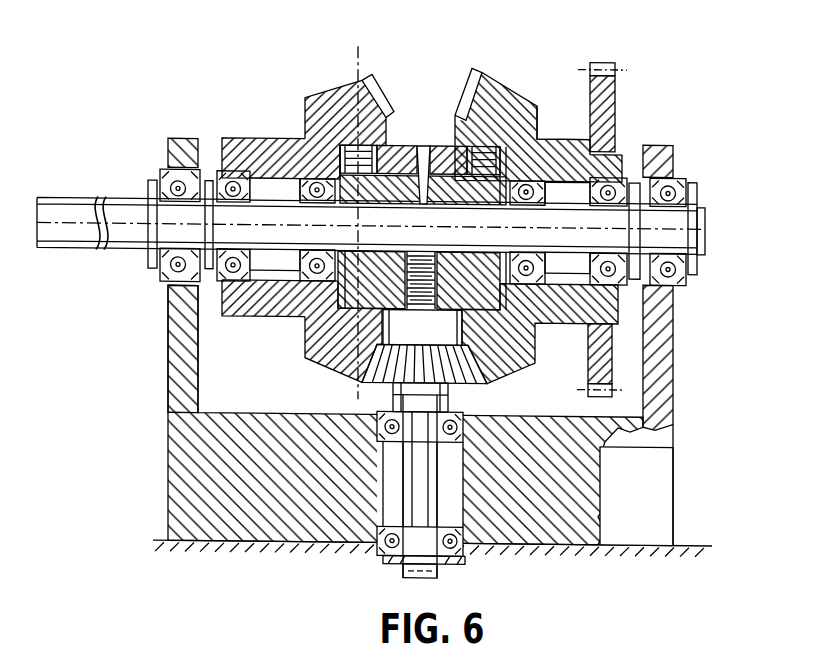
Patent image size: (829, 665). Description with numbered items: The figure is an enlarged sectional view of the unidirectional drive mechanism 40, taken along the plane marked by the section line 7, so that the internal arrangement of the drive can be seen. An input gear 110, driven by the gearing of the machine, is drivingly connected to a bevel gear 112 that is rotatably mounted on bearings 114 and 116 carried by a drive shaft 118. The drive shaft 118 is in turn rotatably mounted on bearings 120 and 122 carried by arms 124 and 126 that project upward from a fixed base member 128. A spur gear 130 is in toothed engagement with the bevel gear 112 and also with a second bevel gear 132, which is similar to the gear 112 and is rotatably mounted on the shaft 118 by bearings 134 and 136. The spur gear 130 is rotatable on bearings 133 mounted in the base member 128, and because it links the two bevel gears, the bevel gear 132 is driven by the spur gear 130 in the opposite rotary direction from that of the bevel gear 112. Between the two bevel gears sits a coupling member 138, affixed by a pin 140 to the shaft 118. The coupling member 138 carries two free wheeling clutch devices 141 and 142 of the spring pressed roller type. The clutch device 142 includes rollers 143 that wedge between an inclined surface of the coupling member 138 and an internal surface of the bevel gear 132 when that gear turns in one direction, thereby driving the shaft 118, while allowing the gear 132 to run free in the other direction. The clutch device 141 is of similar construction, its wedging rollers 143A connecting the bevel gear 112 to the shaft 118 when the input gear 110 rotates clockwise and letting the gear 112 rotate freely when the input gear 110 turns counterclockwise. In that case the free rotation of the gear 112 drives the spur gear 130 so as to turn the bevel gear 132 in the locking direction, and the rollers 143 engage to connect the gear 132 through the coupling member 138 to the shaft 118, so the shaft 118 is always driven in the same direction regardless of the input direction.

The unidirectional drive mechanism 40 is at (431, 94).
The section line 7- 7 is at (383, 62).
The input gear 110 is at (617, 86).
The bevel gear 112 is at (497, 91).
The bearing 114 is at (611, 185).
The bearing 116 is at (527, 186).
The drive shaft 118 is at (116, 200).
The bearing 120 is at (687, 178).
The bearing 122 is at (170, 170).
The arm 124 is at (673, 345).
The arm 126 is at (173, 345).
The fixed base member 128 is at (175, 475).
The spur gear 130 is at (473, 385).
The second bevel gear 132 is at (331, 92).
The bearings 133 is at (375, 415).
The bearing 134 is at (300, 173).
The bearing 136 is at (235, 185).
The coupling member 138 is at (455, 205).
The pin 140 is at (422, 328).
The free wheeling clutch device 141 is at (538, 105).
The free wheeling clutch device 142 is at (343, 143).
The rollers 143 is at (376, 148).
The wedging rollers 143A is at (478, 152).